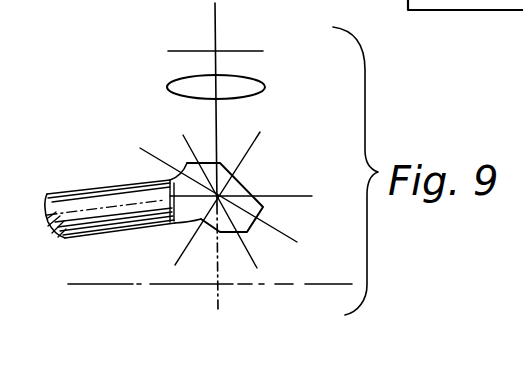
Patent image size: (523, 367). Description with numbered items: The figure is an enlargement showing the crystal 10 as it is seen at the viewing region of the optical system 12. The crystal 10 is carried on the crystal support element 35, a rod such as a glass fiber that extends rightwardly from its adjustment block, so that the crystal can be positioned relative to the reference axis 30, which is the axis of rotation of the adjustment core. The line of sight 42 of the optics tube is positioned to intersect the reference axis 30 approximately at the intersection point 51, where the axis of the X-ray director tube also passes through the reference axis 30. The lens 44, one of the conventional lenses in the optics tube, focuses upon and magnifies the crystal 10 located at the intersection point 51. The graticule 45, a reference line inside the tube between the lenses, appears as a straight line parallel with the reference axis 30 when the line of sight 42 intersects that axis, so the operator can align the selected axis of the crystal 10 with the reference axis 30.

The crystal 10 is at (243, 188).
The optical system 12 is at (148, 88).
The reference axis 30 is at (297, 280).
The crystal support element 35 is at (86, 197).
The line of sight 42 is at (215, 124).
The lens 44 is at (248, 88).
The graticule 45 is at (218, 51).
The intersection point 51 is at (216, 286).